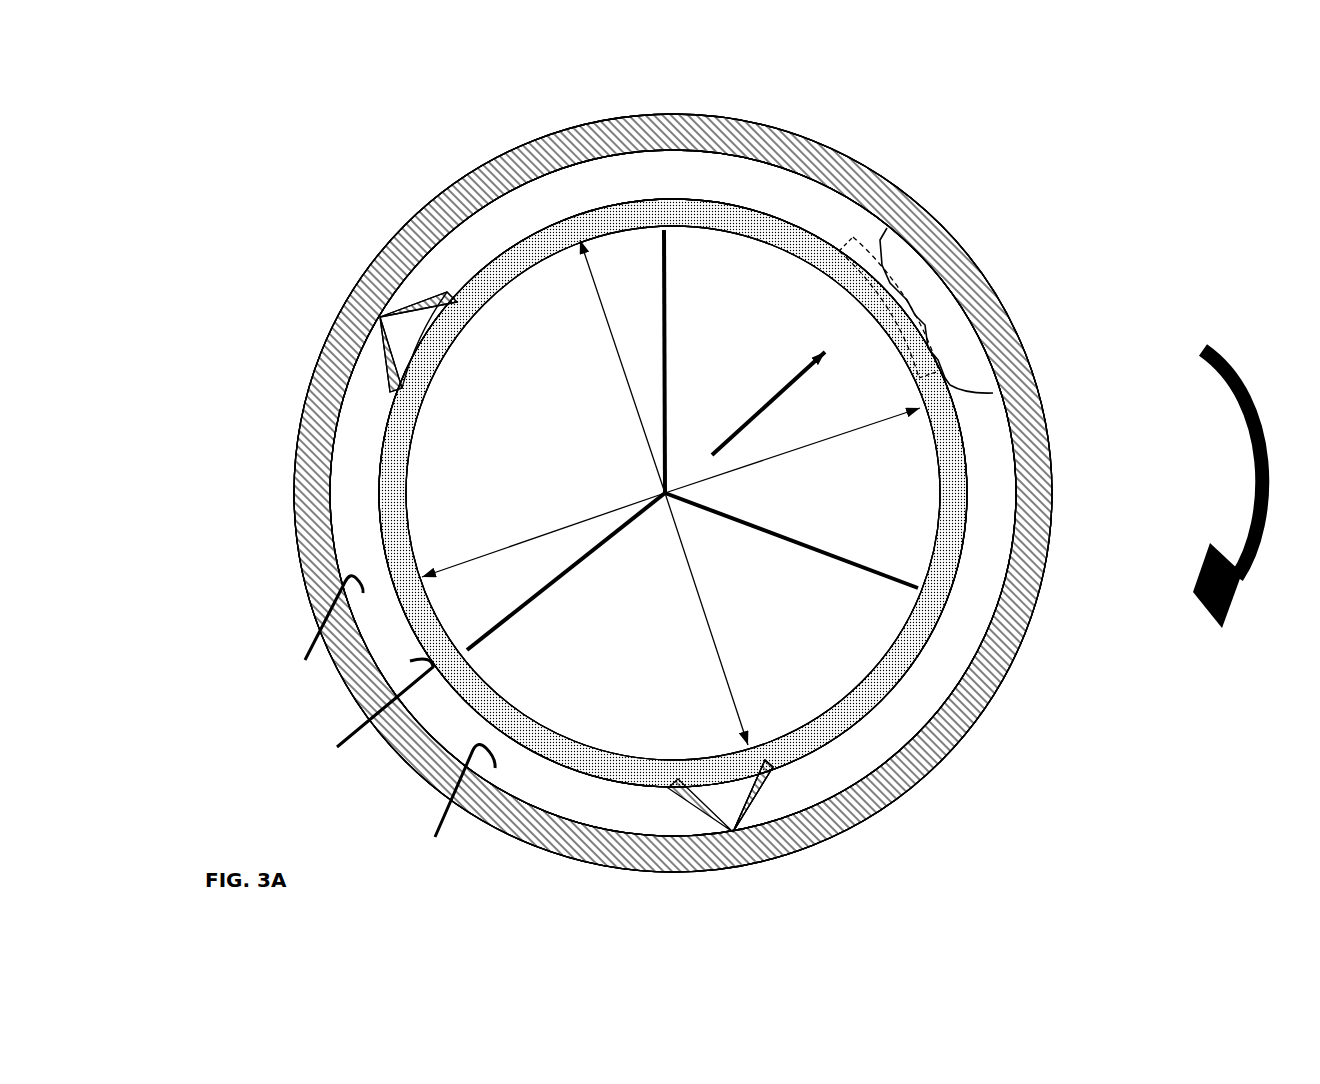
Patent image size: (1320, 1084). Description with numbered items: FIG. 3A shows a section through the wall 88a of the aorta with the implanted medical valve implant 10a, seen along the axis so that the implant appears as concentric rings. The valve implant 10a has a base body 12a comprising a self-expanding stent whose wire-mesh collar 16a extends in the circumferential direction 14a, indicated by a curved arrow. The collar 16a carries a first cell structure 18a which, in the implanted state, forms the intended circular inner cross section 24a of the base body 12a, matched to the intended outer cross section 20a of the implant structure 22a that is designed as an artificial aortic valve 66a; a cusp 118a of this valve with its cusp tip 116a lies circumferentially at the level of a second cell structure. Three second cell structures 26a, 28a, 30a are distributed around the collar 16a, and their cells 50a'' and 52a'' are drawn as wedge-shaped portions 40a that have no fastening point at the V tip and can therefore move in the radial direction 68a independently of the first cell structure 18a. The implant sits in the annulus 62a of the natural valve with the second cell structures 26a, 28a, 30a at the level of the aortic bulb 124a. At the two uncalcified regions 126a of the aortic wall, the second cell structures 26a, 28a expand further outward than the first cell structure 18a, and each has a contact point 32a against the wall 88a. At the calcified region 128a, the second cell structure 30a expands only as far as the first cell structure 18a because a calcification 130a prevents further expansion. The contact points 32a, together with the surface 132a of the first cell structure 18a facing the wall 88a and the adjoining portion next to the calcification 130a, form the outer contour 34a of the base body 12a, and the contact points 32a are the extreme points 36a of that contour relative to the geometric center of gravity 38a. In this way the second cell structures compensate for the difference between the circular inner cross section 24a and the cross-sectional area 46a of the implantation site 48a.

The medical valve implant 10a is at (525, 765).
The base body 12a is at (467, 692).
The circumferential direction 14a is at (1230, 360).
The collar 16a is at (467, 692).
The first cell structure 18a is at (967, 598).
The outer cross section 20a is at (608, 322).
The implant structure 22a is at (825, 643).
The inner cross section 24a is at (797, 458).
The second cell structure 26a is at (663, 817).
The second cell structure 28a is at (418, 283).
The second cell structure 30a is at (853, 253).
The contact point 32a is at (358, 293).
The outer contour 34a is at (530, 235).
The extreme point 36a is at (358, 293).
The geometric center of gravity 38a is at (665, 493).
The portion 40a is at (410, 305).
The cross-sectional area 46a is at (324, 638).
The implantation site 48a is at (287, 588).
The cell 50a'' is at (861, 796).
The cell 52a'' is at (316, 364).
The annulus 62a is at (452, 799).
The aortic valve 66a is at (825, 643).
The radial direction 68a is at (778, 385).
The wall 88a is at (317, 522).
The cusp tip 116a is at (683, 522).
The cusp 118a is at (890, 492).
The aortic bulb 124a is at (398, 673).
The uncalcified region 126a is at (303, 322).
The calcified region 128a is at (1005, 240).
The calcification 130a is at (957, 343).
The surface 132a is at (599, 627).